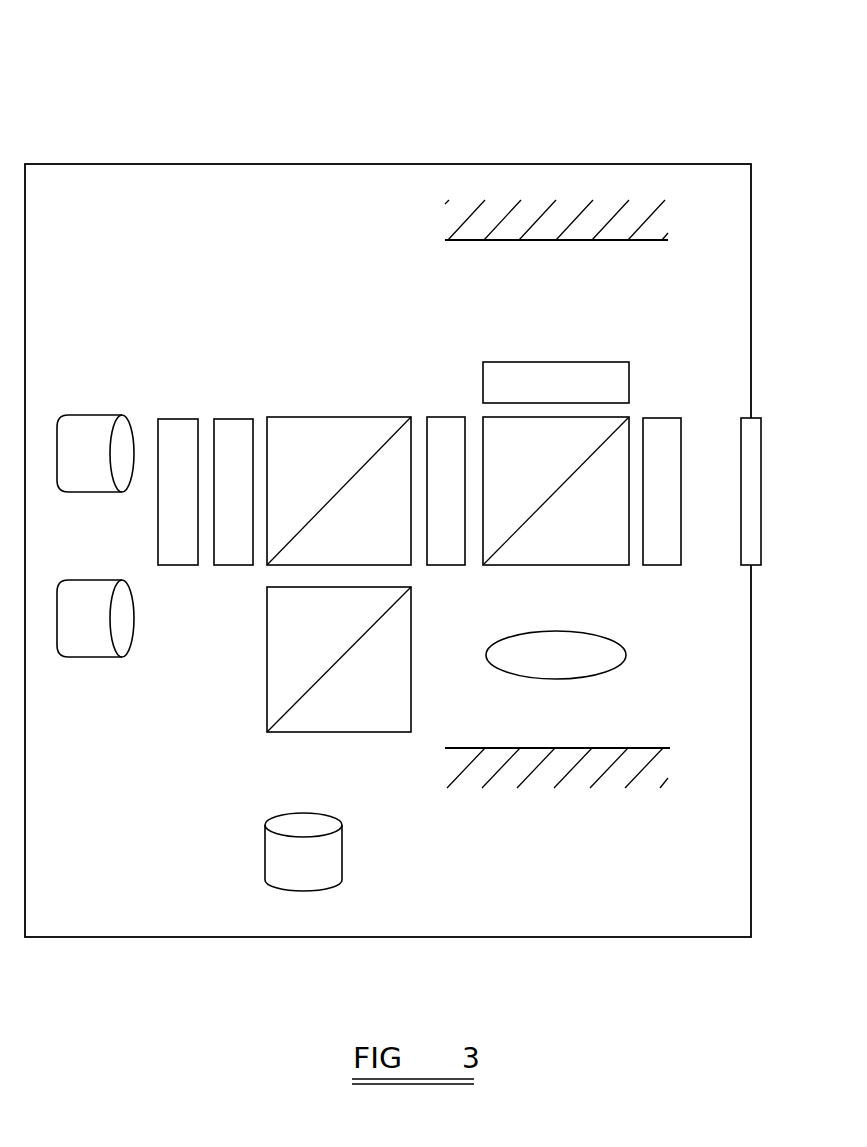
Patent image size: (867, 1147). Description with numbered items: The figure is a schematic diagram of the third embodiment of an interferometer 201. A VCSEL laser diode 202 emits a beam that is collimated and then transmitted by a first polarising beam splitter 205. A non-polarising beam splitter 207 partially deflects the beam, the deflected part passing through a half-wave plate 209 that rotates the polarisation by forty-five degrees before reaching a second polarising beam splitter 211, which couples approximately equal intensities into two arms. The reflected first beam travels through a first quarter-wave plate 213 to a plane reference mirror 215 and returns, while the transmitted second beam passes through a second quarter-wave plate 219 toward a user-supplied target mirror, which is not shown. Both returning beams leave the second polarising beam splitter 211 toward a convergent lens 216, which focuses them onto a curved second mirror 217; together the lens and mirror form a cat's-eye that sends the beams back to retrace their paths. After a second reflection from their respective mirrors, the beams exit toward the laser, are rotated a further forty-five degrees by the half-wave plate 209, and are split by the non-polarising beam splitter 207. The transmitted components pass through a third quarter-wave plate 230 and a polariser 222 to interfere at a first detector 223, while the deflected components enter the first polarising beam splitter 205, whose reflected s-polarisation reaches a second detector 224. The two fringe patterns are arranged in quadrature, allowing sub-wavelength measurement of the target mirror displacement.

The interferometer 201 is at (100, 163).
The VCSEL laser diode 202 is at (326, 853).
The first polarising beam splitter 205 is at (268, 695).
The non-polarising beam splitter 207 is at (327, 424).
The half-wave plate 209 is at (448, 417).
The second polarising beam splitter 211 is at (538, 559).
The first quarter-wave plate 213 is at (567, 361).
The reference mirror 215 is at (578, 244).
The convergent lens 216 is at (628, 661).
The second mirror 217 is at (569, 746).
The second quarter-wave plate 219 is at (658, 568).
The polariser 222 is at (174, 567).
The first detector 223 is at (88, 431).
The second detector 224 is at (126, 637).
The third quarter-wave plate 230 is at (233, 417).